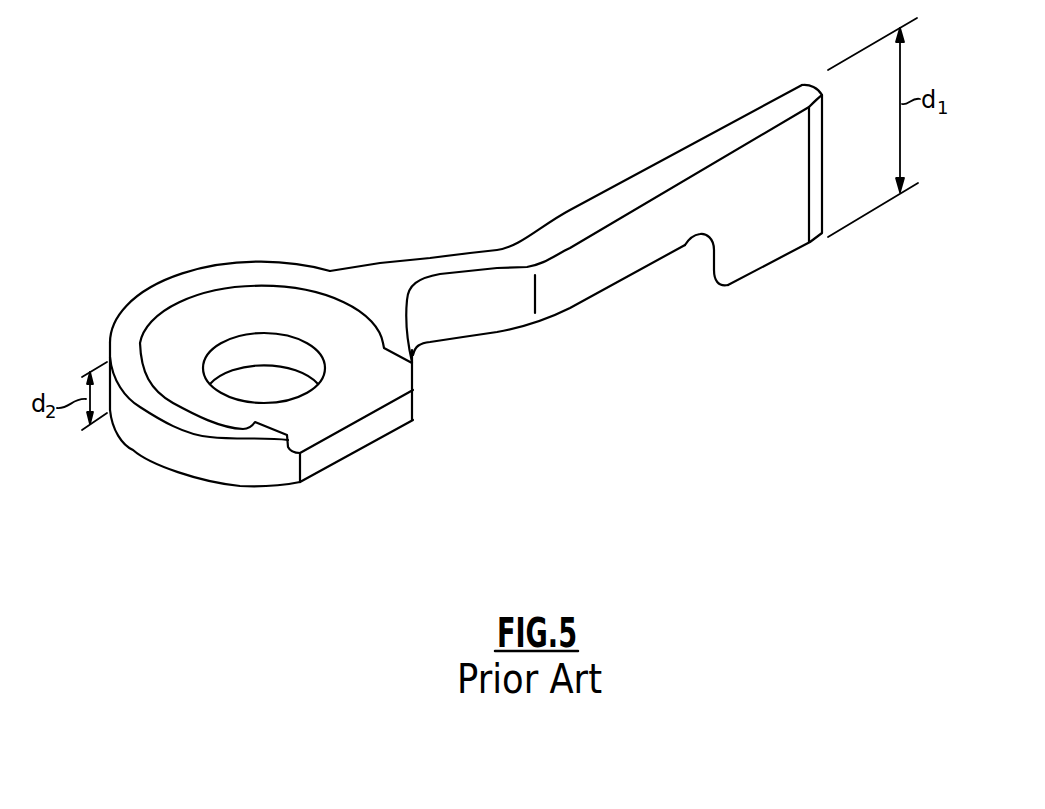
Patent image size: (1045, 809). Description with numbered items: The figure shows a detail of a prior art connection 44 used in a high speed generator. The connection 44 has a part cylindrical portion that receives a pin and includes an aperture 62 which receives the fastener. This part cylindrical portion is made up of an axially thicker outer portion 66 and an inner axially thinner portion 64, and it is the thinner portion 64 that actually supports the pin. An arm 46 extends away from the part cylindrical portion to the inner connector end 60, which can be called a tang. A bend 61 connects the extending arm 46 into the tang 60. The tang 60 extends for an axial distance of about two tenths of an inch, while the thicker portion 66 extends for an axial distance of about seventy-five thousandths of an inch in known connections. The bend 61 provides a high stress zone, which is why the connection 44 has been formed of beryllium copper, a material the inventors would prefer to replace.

The prior art connection 44 is at (158, 297).
The aperture 62 is at (265, 378).
The arm 46 is at (551, 238).
The inner connector end 60 is at (778, 200).
The bend 61 is at (705, 240).
The inner axially thinner portion 64 is at (340, 400).
The axially thicker outer portion 66 is at (249, 428).